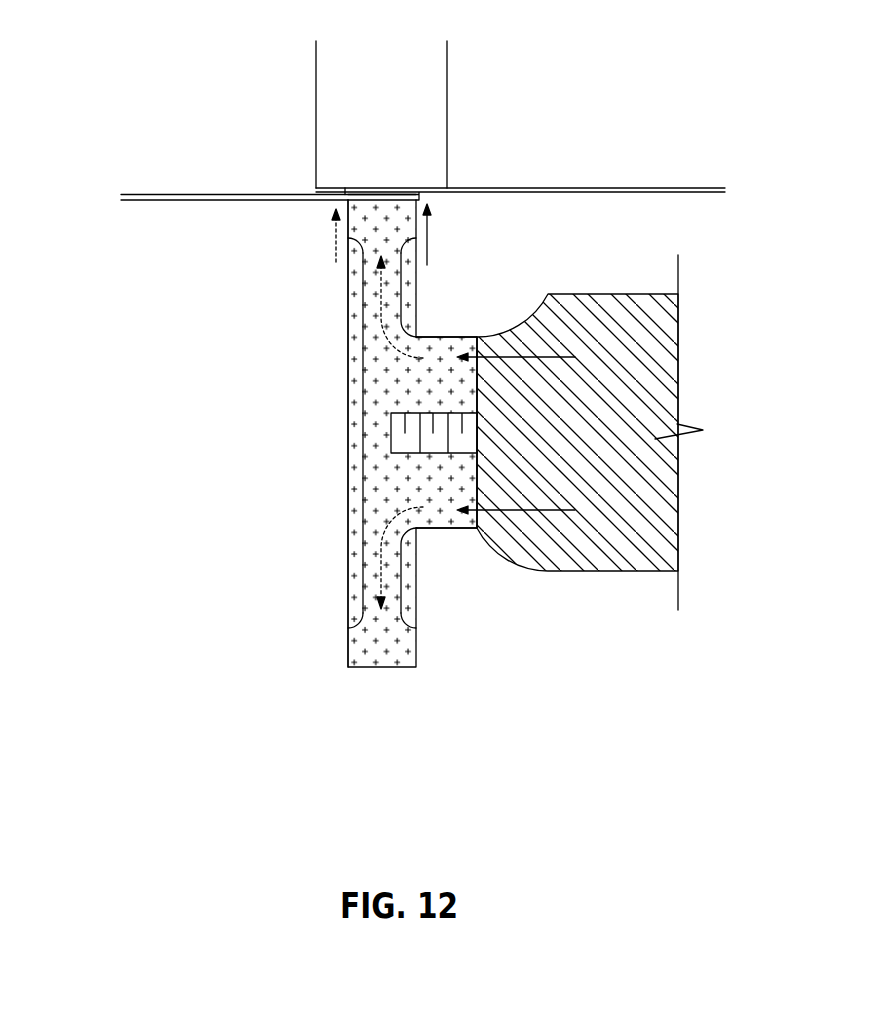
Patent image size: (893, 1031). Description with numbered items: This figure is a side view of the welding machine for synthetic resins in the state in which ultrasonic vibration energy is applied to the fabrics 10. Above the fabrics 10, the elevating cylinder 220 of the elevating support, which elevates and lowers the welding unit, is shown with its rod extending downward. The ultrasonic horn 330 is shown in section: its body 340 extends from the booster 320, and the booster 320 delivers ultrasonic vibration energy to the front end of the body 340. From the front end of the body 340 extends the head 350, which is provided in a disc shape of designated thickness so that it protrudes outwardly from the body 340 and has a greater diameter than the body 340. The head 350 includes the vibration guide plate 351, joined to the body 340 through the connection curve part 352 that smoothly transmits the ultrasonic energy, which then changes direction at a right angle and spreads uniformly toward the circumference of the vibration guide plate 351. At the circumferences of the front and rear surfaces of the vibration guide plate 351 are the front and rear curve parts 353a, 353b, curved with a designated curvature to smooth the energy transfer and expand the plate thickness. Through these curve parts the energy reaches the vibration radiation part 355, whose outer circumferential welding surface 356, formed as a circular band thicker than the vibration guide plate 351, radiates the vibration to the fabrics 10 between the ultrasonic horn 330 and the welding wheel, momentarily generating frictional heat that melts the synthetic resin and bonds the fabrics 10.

The fabrics 10 is at (148, 198).
The elevating cylinder 220 is at (410, 79).
The booster 320 is at (634, 555).
The ultrasonic horn 330 is at (240, 564).
The body 340 is at (453, 530).
The head 350 is at (346, 478).
The vibration guide plate 351 is at (363, 405).
The connection curve part 352 is at (403, 540).
The front curve part 353a is at (343, 622).
The rear curve part 353b is at (415, 626).
The vibration radiation part 355 is at (347, 227).
The welding surface 356 is at (372, 197).